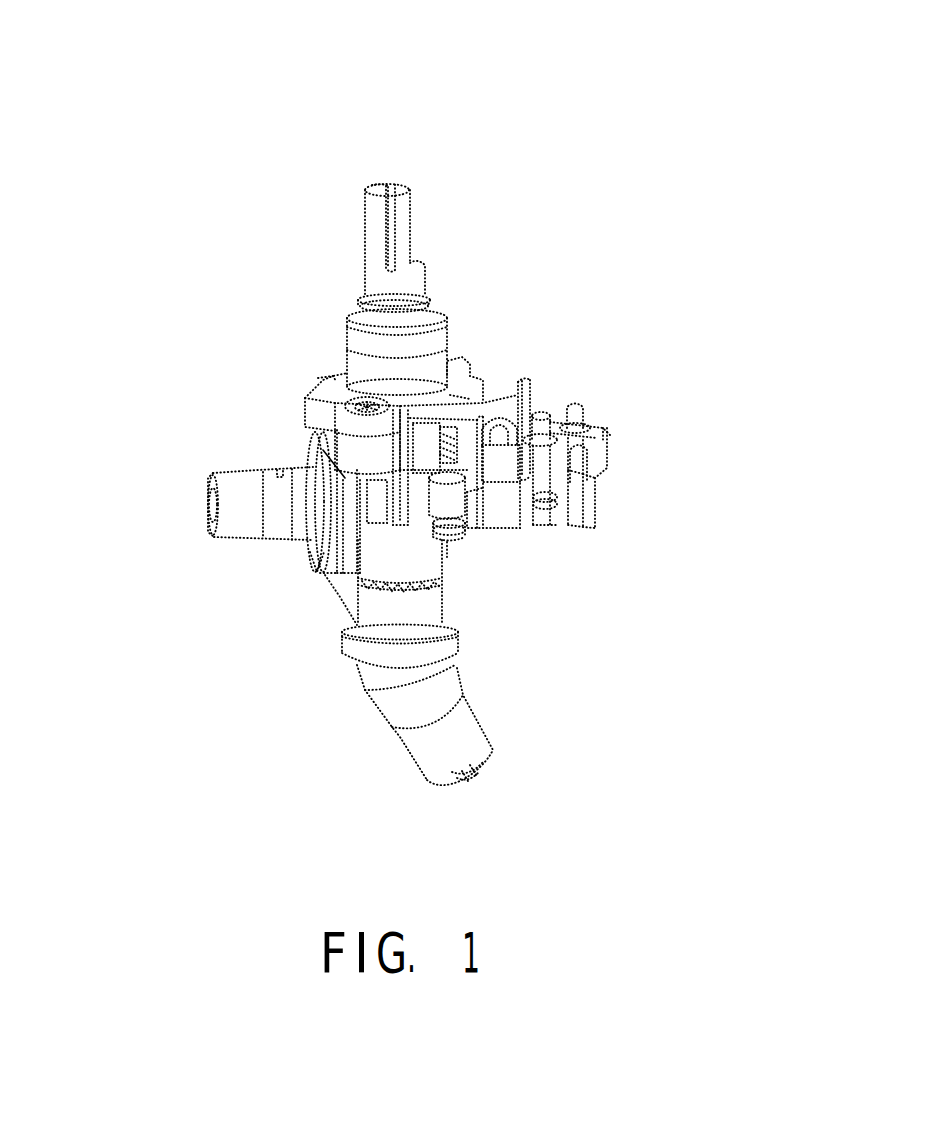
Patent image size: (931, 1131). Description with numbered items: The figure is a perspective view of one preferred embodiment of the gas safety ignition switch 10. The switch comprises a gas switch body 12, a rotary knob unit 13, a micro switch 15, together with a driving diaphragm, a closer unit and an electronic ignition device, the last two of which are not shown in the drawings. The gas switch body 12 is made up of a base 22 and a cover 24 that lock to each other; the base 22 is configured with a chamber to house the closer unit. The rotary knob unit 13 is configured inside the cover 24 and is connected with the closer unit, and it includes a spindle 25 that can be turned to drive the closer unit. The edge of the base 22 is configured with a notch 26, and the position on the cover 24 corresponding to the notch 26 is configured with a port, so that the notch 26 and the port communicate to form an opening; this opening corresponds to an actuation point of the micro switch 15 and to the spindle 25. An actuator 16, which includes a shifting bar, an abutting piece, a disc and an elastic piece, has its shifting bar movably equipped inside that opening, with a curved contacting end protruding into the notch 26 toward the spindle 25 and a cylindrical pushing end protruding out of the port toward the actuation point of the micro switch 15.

The gas safety ignition switch 10 is at (197, 165).
The gas switch body 12 is at (318, 620).
The rotary knob unit 13 is at (447, 235).
The micro switch 15 is at (633, 416).
The actuator 16 is at (493, 425).
The base 22 is at (433, 565).
The cover 24 is at (332, 378).
The spindle 25 is at (373, 232).
The notch 26 is at (507, 432).